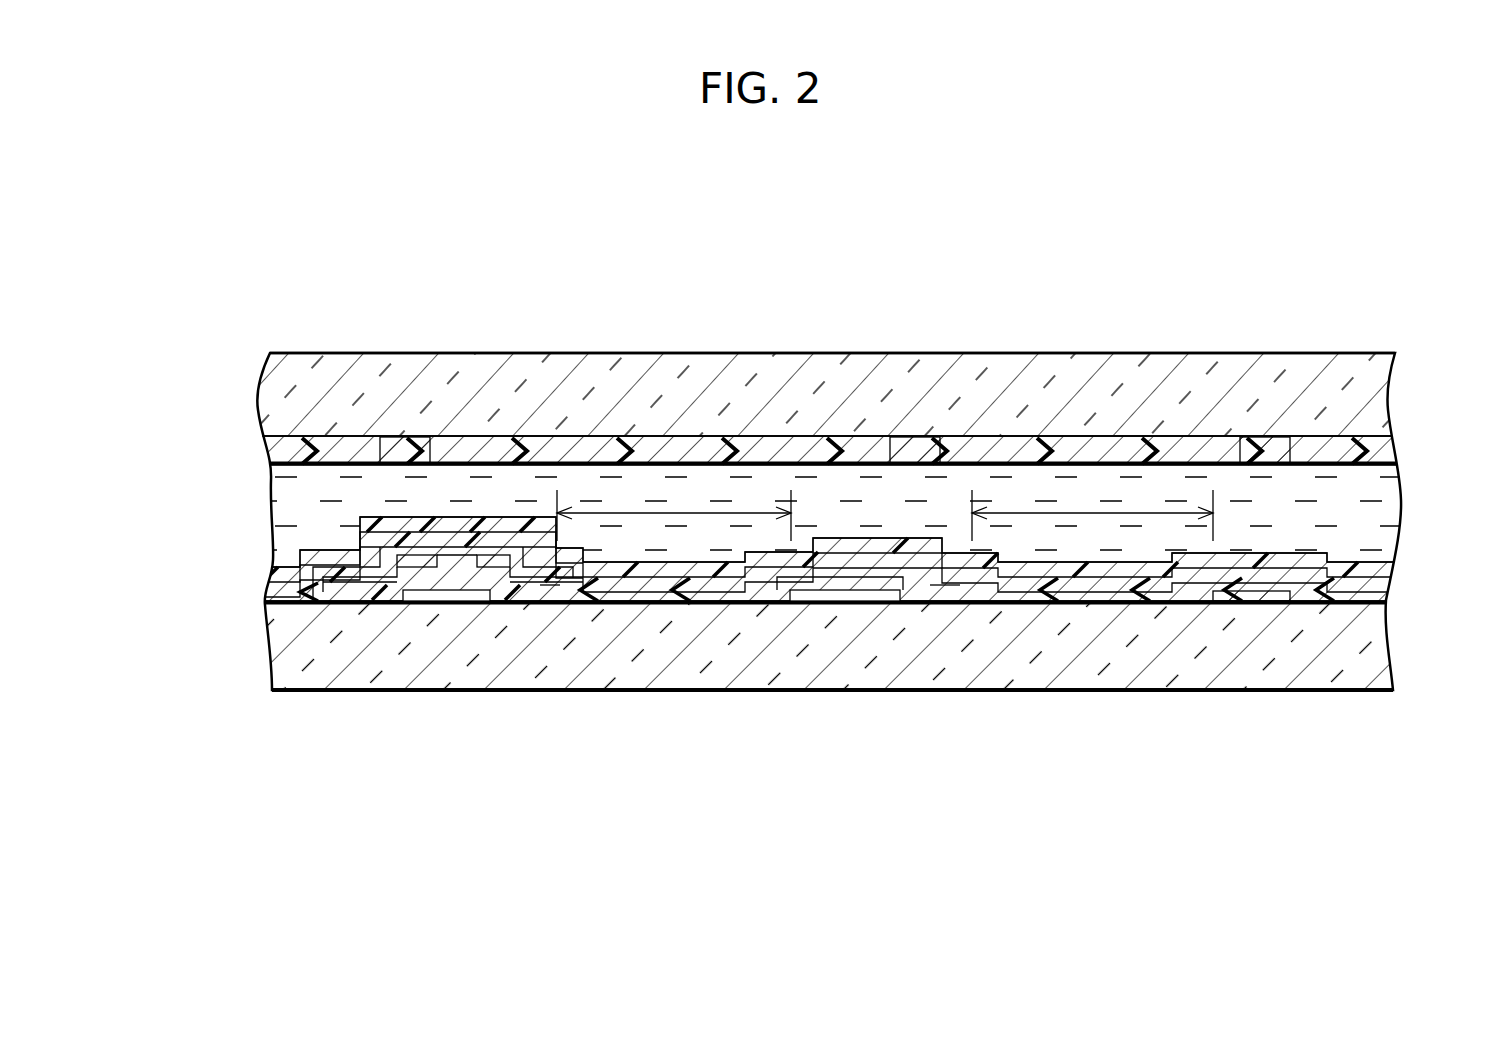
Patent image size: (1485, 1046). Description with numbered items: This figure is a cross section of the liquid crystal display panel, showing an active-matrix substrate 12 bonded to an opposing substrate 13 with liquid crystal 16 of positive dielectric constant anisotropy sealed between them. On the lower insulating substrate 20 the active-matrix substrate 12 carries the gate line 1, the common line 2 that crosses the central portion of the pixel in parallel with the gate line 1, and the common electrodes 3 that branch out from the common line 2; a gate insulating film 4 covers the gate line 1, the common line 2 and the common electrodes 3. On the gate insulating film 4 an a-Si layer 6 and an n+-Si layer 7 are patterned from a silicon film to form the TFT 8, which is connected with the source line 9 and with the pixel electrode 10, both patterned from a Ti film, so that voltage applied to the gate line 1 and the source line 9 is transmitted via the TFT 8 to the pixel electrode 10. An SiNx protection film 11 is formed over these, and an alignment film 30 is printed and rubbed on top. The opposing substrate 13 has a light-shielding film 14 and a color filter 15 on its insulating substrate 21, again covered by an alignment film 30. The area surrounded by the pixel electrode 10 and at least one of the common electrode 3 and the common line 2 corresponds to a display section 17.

The gate line 1 is at (430, 592).
The common line 2 is at (845, 590).
The common electrode 3 is at (1268, 590).
The gate insulating film 4 is at (700, 590).
The a-Si layer 6 is at (455, 580).
The n+-Si layer 7 is at (500, 585).
The TFT 8 is at (448, 516).
The source line 9 is at (360, 585).
The pixel electrode 10 is at (535, 583).
The protection film 11 is at (760, 583).
The active-matrix substrate 12 is at (804, 516).
The opposing substrate 13 is at (821, 345).
The light-shielding film 14 is at (402, 447).
The color filter 15 is at (915, 447).
The liquid crystal 16 is at (1380, 515).
The display section 17 is at (683, 513).
The insulating substrate 20 is at (1380, 650).
The insulating substrate 21 is at (1380, 410).
The alignment film 30 is at (1380, 460).